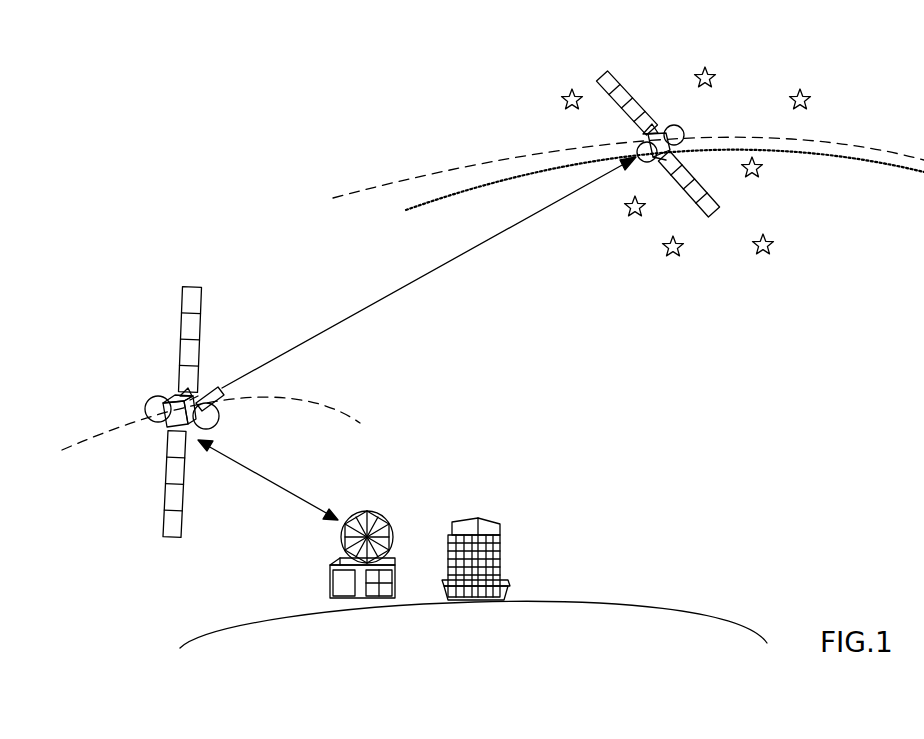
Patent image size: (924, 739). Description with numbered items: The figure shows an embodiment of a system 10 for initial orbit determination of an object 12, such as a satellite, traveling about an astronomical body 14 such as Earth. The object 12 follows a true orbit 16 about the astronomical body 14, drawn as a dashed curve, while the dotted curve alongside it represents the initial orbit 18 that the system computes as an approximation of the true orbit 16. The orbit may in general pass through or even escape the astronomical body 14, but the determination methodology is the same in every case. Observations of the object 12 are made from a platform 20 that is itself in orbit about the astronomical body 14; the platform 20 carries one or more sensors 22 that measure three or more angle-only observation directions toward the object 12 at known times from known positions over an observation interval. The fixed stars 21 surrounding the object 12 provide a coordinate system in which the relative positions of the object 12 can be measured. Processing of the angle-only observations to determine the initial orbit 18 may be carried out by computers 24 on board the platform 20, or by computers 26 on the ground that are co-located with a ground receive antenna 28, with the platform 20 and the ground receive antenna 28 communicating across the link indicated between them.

The system for initial orbit determination 10 is at (668, 380).
The object 12 is at (652, 123).
The astronomical body 14 is at (466, 623).
The orbit 16 is at (846, 152).
The initial orbit 18 is at (846, 168).
The platform 20 is at (167, 412).
The fixed stars 21 is at (708, 83).
The sensor 22 is at (216, 385).
The computer on-board the platform 24 is at (152, 400).
The computer co-located with ground receive antenna 26 is at (508, 546).
The ground receive antenna 28 is at (340, 547).